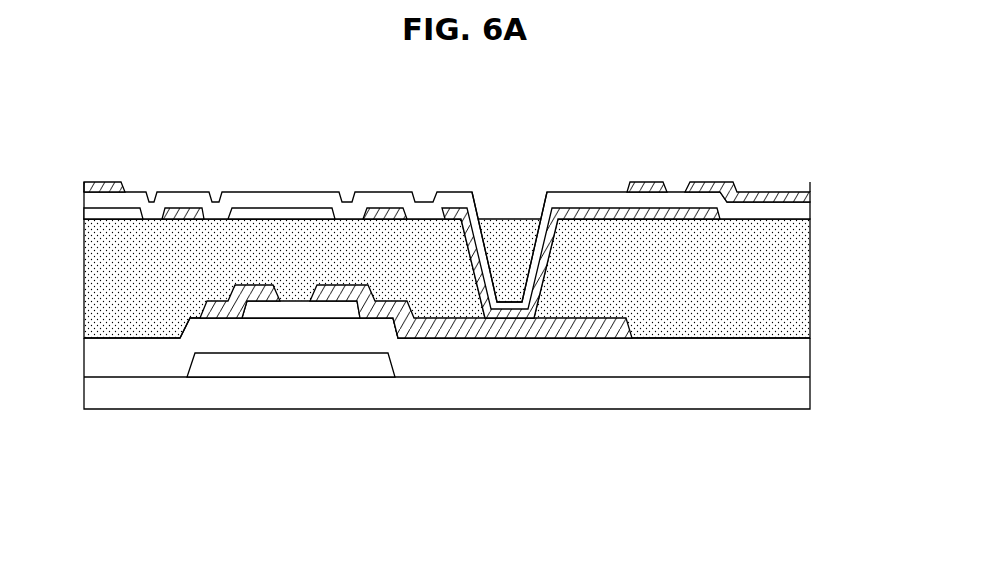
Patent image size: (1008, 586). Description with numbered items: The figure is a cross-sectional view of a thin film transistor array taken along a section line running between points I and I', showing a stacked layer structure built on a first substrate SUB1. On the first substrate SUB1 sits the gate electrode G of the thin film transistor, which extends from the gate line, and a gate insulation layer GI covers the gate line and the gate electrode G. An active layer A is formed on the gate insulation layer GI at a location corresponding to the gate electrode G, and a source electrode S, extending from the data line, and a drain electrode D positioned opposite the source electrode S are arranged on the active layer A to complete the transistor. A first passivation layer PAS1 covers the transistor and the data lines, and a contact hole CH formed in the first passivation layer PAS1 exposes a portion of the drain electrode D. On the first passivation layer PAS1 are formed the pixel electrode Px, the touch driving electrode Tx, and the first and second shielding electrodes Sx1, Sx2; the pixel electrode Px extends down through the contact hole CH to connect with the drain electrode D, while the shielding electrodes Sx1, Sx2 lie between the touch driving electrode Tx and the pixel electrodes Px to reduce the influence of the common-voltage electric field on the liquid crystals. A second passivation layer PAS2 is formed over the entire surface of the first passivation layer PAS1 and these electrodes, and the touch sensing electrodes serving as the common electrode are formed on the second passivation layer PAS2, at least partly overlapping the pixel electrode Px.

The first shielding electrode Sx1 is at (181, 207).
The touch driving electrode Tx is at (271, 214).
The second shielding electrode Sx2 is at (385, 207).
The contact hole CH is at (511, 212).
The pixel electrode Px is at (83, 212).
The second passivation layer PAS2 is at (806, 212).
The first passivation layer PAS1 is at (806, 273).
The gate insulation layer GI is at (806, 356).
The first substrate SUB1 is at (806, 394).
The source electrode S is at (235, 313).
The gate electrode G is at (279, 371).
The active layer A is at (325, 313).
The drain electrode D is at (586, 339).
The section line start I is at (83, 433).
The section line end I' is at (810, 433).